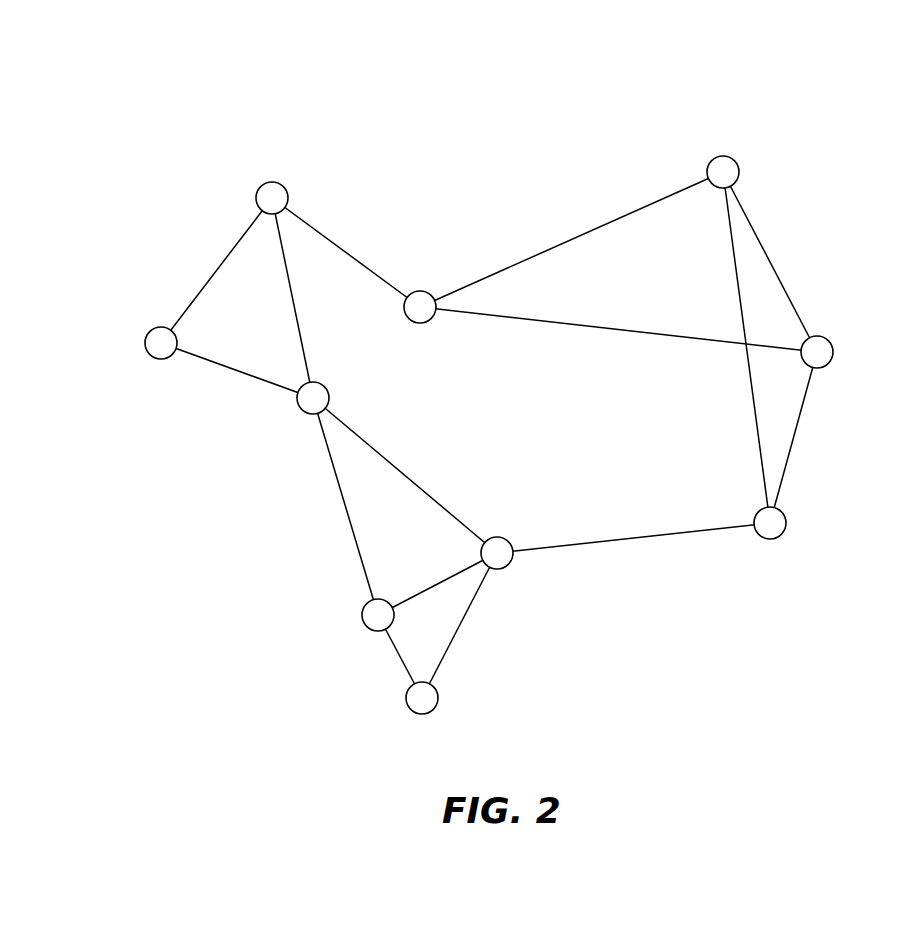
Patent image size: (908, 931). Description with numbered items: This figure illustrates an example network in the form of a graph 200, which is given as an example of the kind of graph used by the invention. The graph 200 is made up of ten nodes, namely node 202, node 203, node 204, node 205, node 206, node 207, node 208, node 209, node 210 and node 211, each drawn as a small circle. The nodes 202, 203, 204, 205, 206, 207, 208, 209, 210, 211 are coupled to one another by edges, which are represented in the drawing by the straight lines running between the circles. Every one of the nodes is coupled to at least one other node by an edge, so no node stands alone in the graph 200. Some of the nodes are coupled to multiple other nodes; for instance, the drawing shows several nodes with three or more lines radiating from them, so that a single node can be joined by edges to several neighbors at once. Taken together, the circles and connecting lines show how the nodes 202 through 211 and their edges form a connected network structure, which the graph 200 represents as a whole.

The graph 200 is at (172, 80).
The node 202 is at (273, 182).
The node 203 is at (160, 327).
The node 204 is at (421, 291).
The node 205 is at (312, 414).
The node 206 is at (727, 157).
The node 207 is at (820, 337).
The node 208 is at (768, 539).
The node 209 is at (373, 630).
The node 210 is at (502, 568).
The node 211 is at (424, 714).